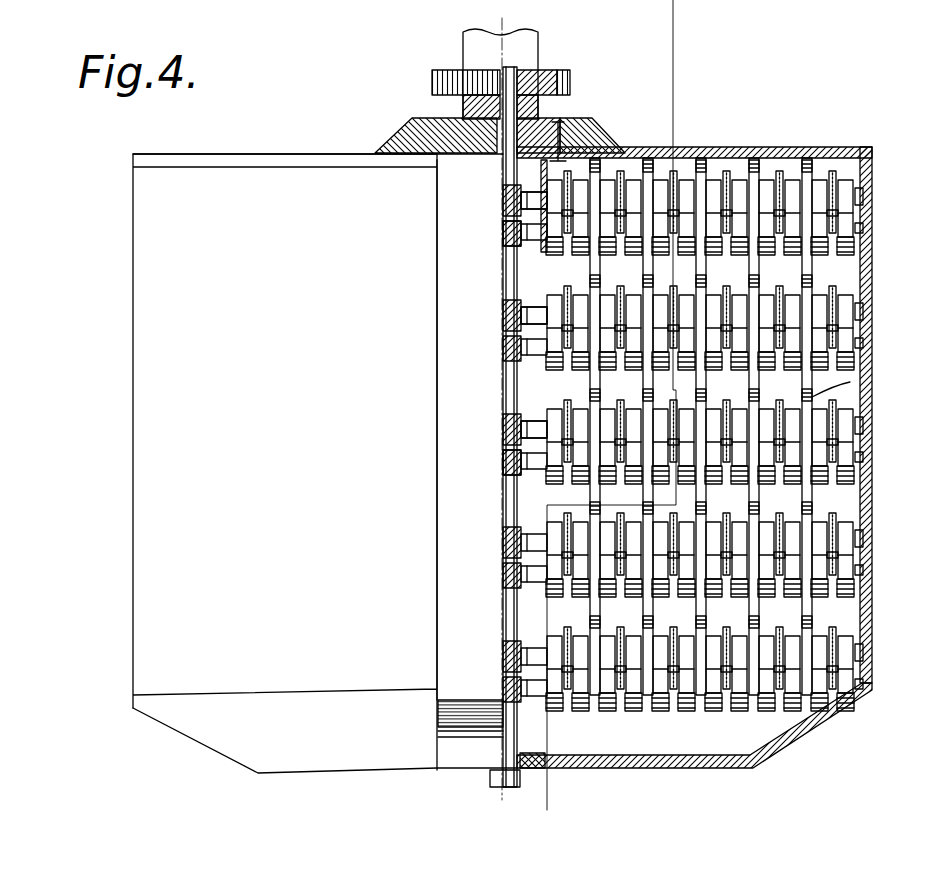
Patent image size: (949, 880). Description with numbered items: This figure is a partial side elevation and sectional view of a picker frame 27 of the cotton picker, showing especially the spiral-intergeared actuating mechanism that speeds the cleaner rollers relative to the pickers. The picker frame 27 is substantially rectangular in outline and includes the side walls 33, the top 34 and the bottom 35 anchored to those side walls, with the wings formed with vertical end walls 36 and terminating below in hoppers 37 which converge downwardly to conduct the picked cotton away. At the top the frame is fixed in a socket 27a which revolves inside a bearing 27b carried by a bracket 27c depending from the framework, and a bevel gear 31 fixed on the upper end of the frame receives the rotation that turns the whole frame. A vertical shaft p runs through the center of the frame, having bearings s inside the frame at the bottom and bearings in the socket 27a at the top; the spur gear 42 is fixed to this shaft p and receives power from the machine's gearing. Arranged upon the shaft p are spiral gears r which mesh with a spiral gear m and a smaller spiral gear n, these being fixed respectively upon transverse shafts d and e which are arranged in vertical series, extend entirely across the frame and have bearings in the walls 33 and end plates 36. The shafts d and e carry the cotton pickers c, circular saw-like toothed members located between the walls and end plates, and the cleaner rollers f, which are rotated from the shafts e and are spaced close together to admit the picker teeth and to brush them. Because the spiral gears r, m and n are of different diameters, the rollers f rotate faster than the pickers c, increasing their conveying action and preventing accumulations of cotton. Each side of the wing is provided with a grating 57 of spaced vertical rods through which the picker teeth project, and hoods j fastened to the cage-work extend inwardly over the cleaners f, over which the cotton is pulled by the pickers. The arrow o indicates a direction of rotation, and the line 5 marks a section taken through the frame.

The picker frame 27 is at (122, 392).
The socket 27a is at (566, 131).
The bearing 27b is at (541, 110).
The bracket 27c is at (464, 47).
The bevel gear 31 is at (413, 118).
The side wall 33 is at (548, 255).
The top 34 is at (285, 161).
The bottom 35 is at (707, 767).
The end wall 36 is at (452, 371).
The hopper 37 is at (196, 738).
The spur gear 42 is at (549, 72).
The grating 57 is at (850, 382).
The section line 5 is at (654, 17).
The cotton picker c is at (744, 206).
The transverse shaft d is at (868, 197).
The transverse shaft e is at (868, 230).
The cleaner roller f is at (713, 214).
The hood j is at (821, 196).
The spiral gear m is at (503, 201).
The spiral gear n is at (503, 235).
The direction of rotation o is at (494, 165).
The vertical shaft p is at (505, 268).
The spiral gear r is at (522, 250).
The bearing s is at (523, 751).